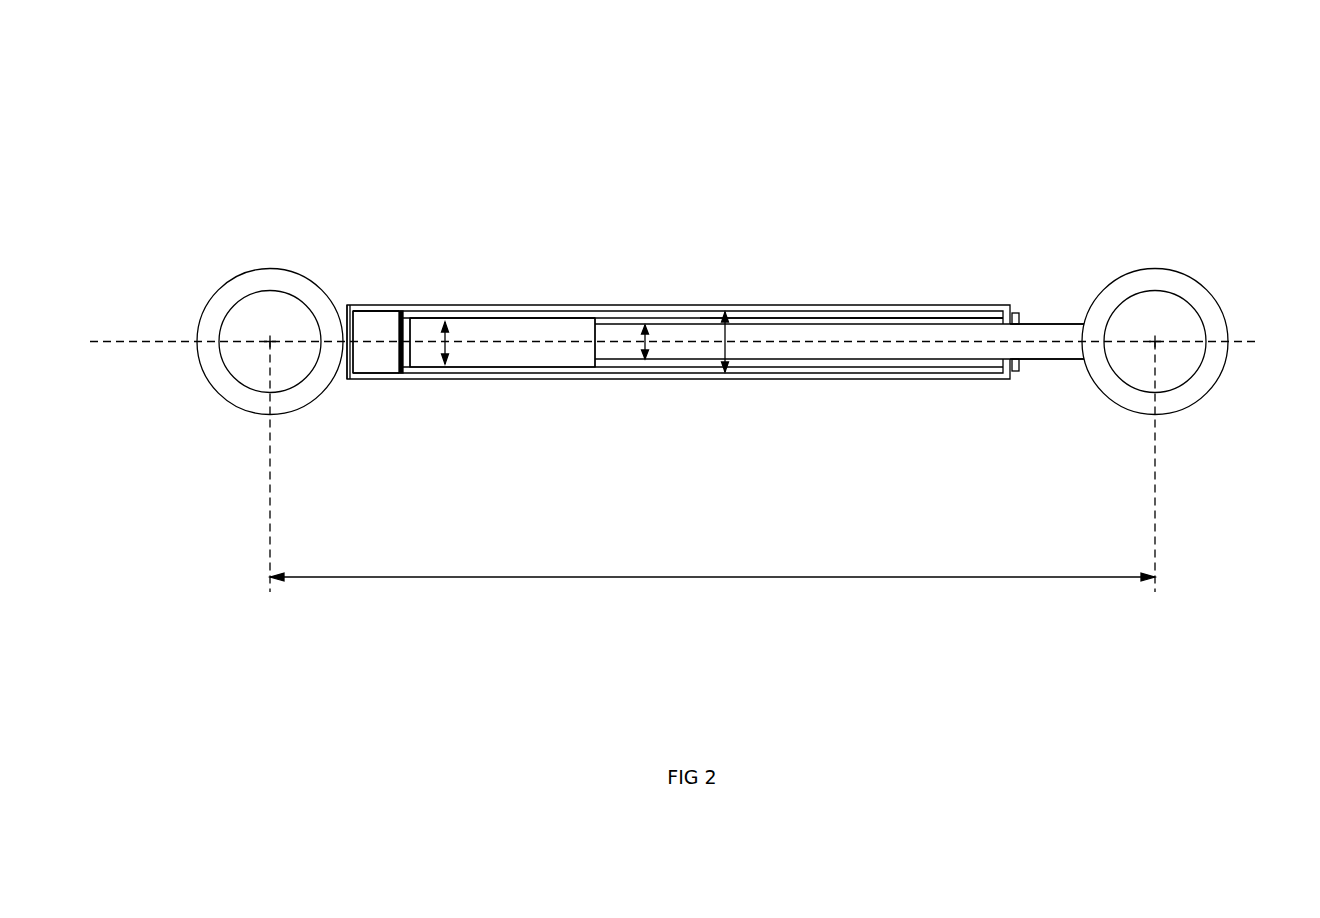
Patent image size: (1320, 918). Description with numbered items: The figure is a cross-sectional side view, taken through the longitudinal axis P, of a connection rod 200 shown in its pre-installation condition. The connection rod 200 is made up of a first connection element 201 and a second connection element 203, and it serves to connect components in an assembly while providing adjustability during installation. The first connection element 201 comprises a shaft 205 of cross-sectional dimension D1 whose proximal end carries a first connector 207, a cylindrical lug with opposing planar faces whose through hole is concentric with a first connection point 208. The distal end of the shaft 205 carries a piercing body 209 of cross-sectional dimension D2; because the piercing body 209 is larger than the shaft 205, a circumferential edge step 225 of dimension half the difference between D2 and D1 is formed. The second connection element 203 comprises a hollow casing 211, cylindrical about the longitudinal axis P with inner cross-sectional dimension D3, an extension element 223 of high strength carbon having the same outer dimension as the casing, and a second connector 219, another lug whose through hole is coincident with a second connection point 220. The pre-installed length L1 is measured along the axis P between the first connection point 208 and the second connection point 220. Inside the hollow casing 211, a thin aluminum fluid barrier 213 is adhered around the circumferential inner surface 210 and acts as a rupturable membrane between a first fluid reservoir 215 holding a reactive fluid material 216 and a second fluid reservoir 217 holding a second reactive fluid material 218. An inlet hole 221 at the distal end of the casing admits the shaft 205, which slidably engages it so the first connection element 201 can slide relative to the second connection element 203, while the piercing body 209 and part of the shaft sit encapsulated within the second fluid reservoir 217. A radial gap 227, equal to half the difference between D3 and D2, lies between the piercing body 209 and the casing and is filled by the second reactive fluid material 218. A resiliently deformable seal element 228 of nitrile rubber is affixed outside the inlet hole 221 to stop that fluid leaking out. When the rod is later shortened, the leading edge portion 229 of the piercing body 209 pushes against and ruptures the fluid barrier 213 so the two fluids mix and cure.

The connection rod 200 is at (623, 213).
The first connection element 201 is at (1082, 400).
The second connection element 203 is at (419, 379).
The shaft 205 is at (793, 359).
The first connector 207 is at (1130, 270).
The first connection point 208 is at (1165, 348).
The piercing body 209 is at (557, 347).
The circumferential inner surface 210 is at (425, 311).
The hollow casing 211 is at (665, 307).
The fluid barrier 213 is at (400, 374).
The first fluid reservoir 215 is at (377, 342).
The reactive fluid material 216 is at (383, 318).
The second fluid reservoir 217 is at (812, 318).
The second reactive fluid material 218 is at (878, 318).
The second connector 219 is at (255, 268).
The second connection point 220 is at (265, 347).
The inlet hole 221 is at (1007, 371).
The extension element 223 is at (337, 305).
The circumferential edge step 225 is at (598, 366).
The radial gap 227 is at (572, 318).
The resiliently deformable seal element 228 is at (1015, 313).
The leading edge portion 229 is at (411, 342).
The cross-sectional dimension of the shaft D1 is at (645, 343).
The cross-sectional dimension of the piercing body D2 is at (445, 342).
The inner cross-sectional dimension of the hollow casing D3 is at (725, 342).
The pre-installed length L1 is at (712, 566).
The longitudinal axis P is at (1248, 342).